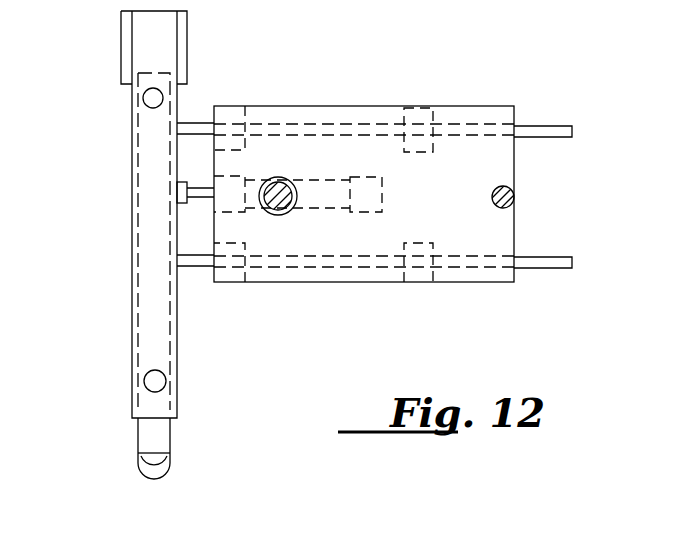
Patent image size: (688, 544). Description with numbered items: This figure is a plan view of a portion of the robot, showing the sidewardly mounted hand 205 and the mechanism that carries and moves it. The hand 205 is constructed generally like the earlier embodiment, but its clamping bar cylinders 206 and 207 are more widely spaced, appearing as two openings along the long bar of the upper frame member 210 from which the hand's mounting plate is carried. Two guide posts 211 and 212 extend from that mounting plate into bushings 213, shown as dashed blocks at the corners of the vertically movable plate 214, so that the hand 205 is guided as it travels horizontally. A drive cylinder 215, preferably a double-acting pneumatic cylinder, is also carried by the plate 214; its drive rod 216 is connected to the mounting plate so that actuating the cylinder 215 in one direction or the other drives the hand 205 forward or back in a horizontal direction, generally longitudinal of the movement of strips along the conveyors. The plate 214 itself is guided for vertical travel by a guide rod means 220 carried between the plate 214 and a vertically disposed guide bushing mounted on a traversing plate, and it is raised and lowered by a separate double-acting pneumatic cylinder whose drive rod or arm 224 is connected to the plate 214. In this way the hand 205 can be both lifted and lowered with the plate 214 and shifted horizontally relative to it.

The hand 205 is at (137, 444).
The clamping bar cylinder 206 is at (144, 99).
The clamping bar cylinder 207 is at (158, 381).
The upper frame member 210 is at (150, 331).
The guide post 211 is at (190, 127).
The guide post 212 is at (198, 262).
The bushings 213 is at (447, 283).
The vertically movable plate 214 is at (495, 116).
The drive cylinder 215 is at (318, 182).
The drive rod 216 is at (200, 195).
The guide rod means 220 is at (513, 193).
The drive rod or arm 224 is at (278, 178).